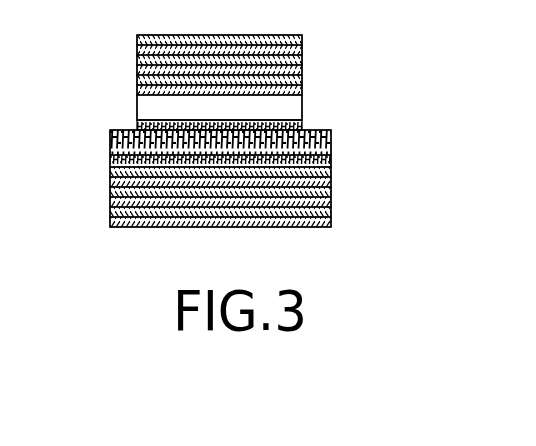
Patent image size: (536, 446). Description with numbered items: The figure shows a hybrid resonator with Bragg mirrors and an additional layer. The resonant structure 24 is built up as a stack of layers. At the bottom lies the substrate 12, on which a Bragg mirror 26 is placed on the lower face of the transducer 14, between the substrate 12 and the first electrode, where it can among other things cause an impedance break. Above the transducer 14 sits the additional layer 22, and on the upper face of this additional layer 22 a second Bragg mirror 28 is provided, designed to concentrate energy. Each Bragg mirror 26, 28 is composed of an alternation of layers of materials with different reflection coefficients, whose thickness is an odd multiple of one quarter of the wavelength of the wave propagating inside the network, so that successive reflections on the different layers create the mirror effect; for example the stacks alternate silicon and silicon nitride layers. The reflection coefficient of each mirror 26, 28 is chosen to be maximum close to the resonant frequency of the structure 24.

The substrate 12 is at (233, 257).
The transducer 14 is at (302, 120).
The additional layer 22 is at (296, 109).
The resonant structure 24 is at (108, 56).
The Bragg mirror 26 is at (331, 191).
The Bragg mirror 28 is at (302, 63).